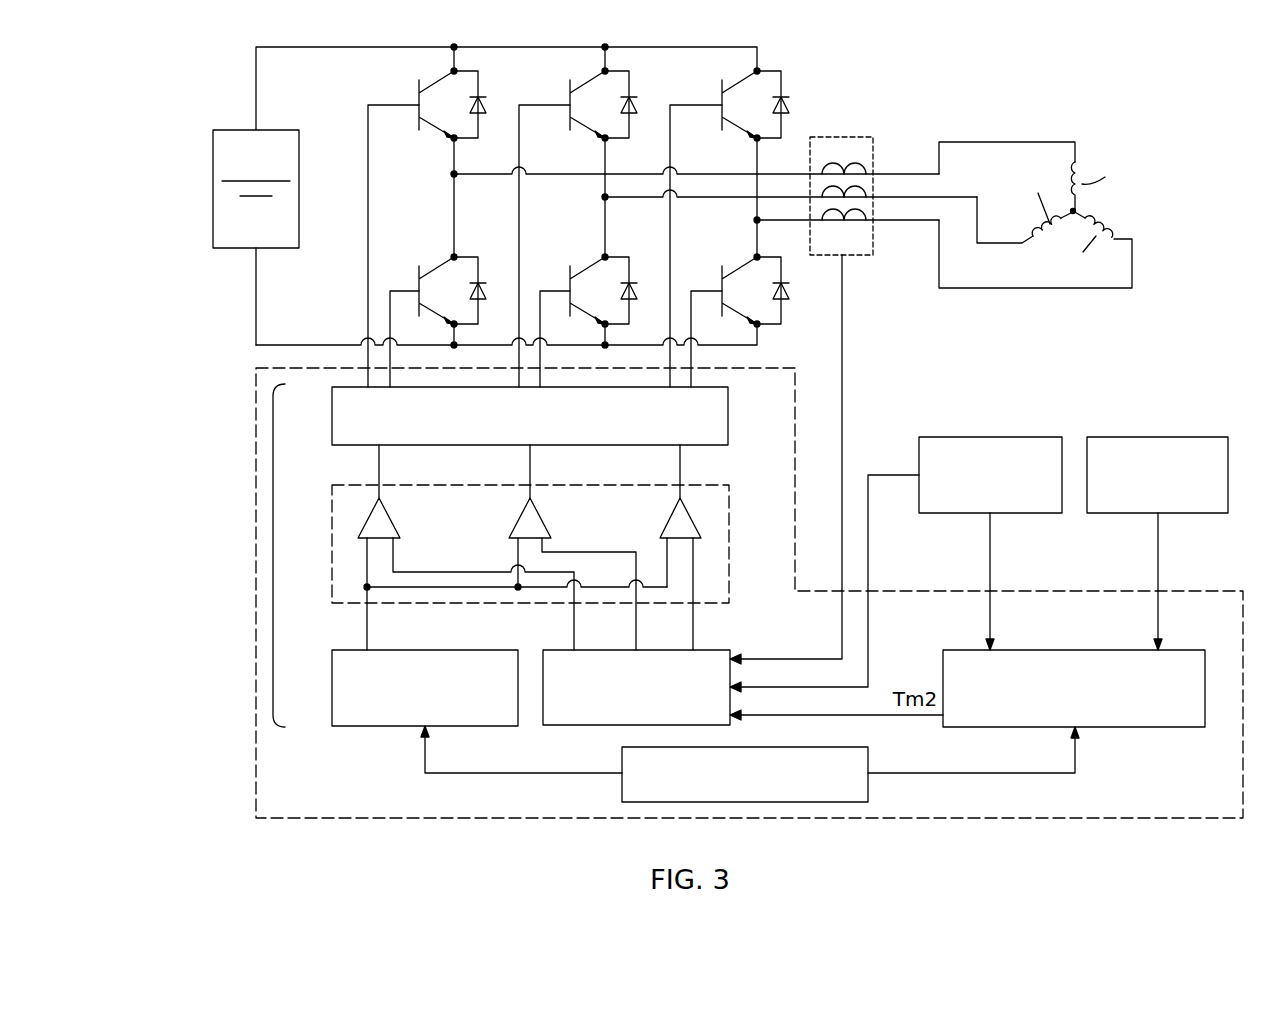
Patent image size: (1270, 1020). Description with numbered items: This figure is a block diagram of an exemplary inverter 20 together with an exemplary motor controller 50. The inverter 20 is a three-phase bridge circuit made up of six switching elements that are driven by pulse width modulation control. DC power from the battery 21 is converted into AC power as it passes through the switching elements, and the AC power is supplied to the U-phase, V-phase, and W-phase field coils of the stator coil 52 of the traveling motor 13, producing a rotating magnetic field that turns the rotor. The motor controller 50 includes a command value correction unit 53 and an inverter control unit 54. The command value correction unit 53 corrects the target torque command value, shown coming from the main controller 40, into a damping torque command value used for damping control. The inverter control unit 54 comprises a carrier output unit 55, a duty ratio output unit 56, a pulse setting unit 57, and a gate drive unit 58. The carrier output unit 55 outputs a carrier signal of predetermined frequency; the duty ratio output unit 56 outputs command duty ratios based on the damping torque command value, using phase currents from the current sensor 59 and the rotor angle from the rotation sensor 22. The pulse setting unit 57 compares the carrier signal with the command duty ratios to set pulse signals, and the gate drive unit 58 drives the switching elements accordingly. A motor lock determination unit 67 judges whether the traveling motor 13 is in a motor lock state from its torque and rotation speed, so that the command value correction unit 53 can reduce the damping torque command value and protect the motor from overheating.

The traveling motor 13 is at (1153, 137).
The inverter 20 is at (805, 63).
The battery 21 is at (212, 156).
The rotation sensor 22 is at (1040, 437).
The main controller 40 is at (1206, 437).
The motor controller 50 is at (244, 440).
The stator coil 52 is at (1110, 214).
The command value correction unit 53 is at (1179, 650).
The inverter control unit 54 is at (270, 561).
The carrier output unit 55 is at (332, 670).
The duty ratio output unit 56 is at (730, 650).
The pulse setting unit 57 is at (332, 505).
The gate drive unit 58 is at (332, 420).
The current sensor 59 is at (856, 137).
The motor lock determination unit 67 is at (873, 760).